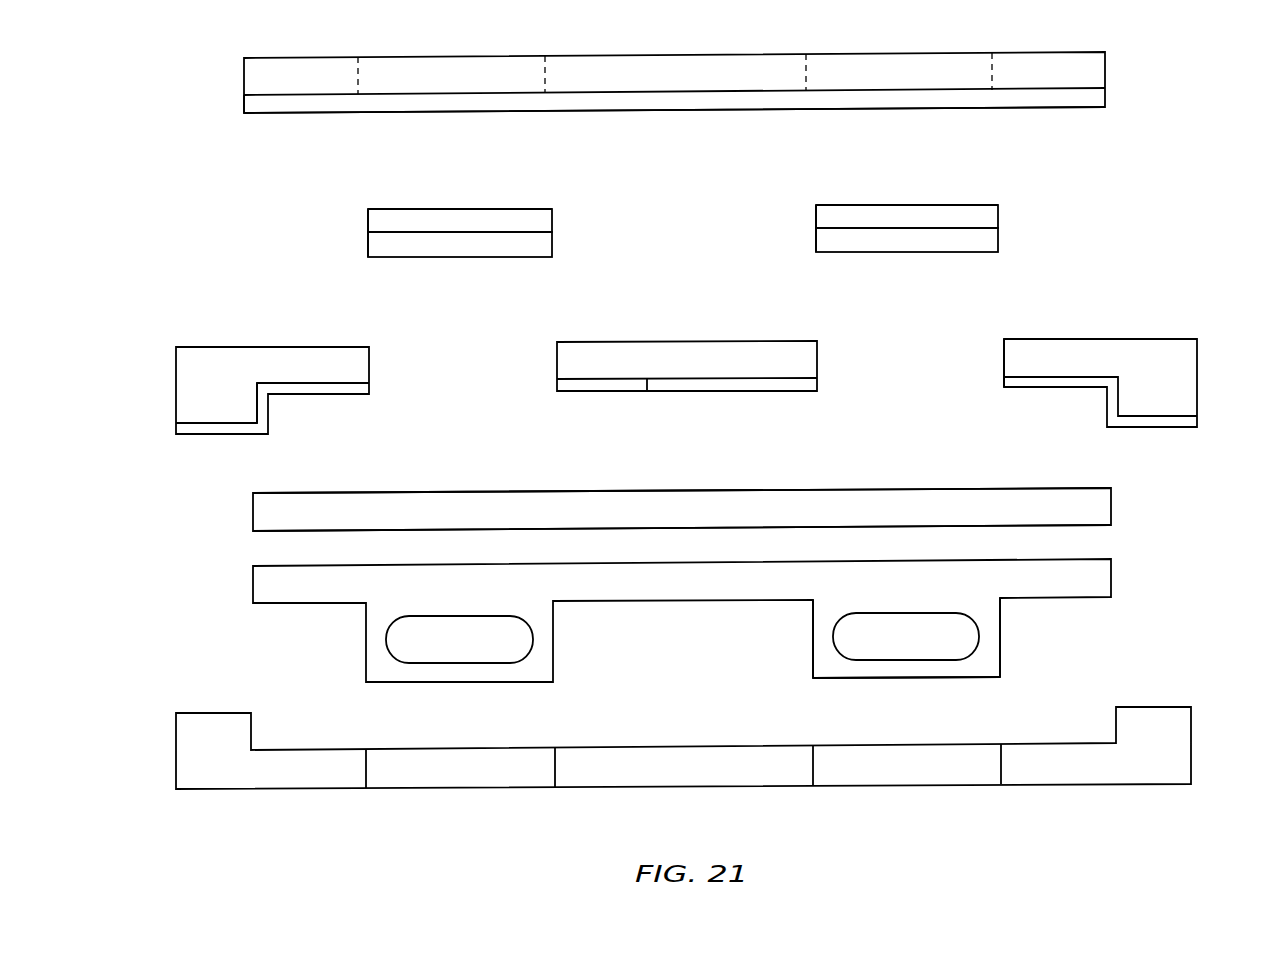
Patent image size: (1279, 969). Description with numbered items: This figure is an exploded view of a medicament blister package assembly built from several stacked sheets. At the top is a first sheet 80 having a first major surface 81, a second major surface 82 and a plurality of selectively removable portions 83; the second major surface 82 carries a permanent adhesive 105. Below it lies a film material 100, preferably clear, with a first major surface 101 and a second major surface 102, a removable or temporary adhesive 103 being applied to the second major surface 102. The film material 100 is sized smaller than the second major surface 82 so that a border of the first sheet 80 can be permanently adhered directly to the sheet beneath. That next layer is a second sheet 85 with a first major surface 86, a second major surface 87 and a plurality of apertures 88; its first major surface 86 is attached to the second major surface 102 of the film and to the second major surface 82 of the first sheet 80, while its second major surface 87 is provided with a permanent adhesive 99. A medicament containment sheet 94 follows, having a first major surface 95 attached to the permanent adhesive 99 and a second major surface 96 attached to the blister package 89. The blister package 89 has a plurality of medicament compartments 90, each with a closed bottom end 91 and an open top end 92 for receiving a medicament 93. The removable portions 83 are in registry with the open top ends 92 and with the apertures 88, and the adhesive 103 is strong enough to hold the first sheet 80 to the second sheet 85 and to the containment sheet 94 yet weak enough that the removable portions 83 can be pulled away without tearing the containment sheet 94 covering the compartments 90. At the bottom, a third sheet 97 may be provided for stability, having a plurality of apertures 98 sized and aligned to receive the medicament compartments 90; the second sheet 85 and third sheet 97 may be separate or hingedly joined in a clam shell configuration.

The first sheet 80 is at (1106, 78).
The first major surface 81 is at (668, 42).
The second major surface 82 is at (282, 97).
The selectively removable portions 83 is at (440, 70).
The second sheet 85 is at (1198, 385).
The first major surface 86 is at (680, 340).
The second major surface 87 is at (277, 385).
The apertures 88 is at (444, 358).
The blister package 89 is at (1112, 584).
The medicament compartments 90 is at (983, 660).
The closed bottom end 91 is at (1002, 675).
The open top end 92 is at (815, 605).
The medicament 93 is at (855, 633).
The medicament containment sheet 94 is at (1113, 508).
The first major surface 95 is at (665, 480).
The second major surface 96 is at (680, 527).
The third sheet 97 is at (1192, 750).
The apertures 98 is at (445, 778).
The permanent adhesive 99 is at (302, 396).
The film material 100 is at (542, 218).
The first major surface 101 is at (447, 207).
The second major surface 102 is at (390, 232).
The removable adhesive 103 is at (542, 247).
The permanent adhesive 105 is at (667, 103).